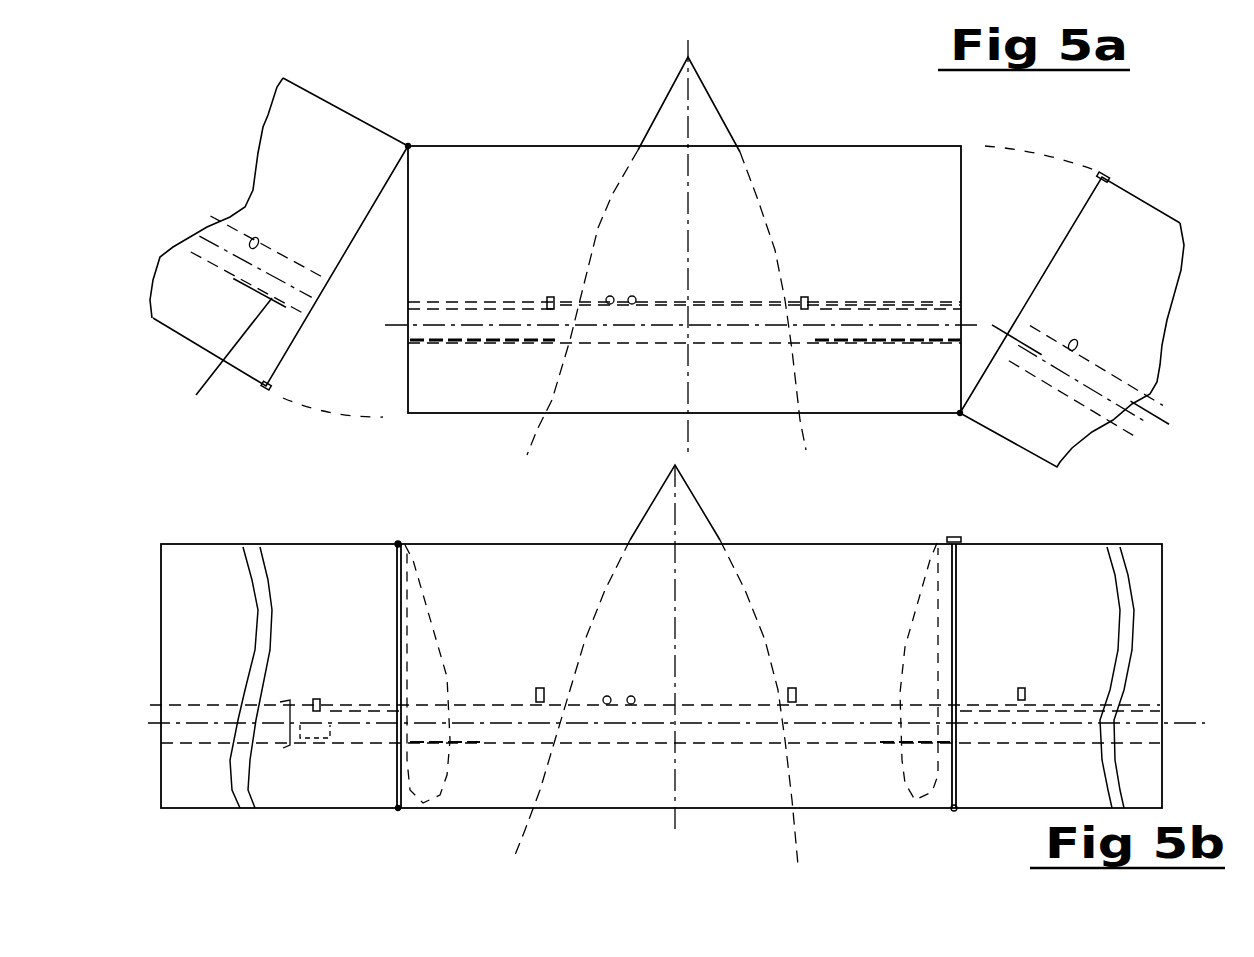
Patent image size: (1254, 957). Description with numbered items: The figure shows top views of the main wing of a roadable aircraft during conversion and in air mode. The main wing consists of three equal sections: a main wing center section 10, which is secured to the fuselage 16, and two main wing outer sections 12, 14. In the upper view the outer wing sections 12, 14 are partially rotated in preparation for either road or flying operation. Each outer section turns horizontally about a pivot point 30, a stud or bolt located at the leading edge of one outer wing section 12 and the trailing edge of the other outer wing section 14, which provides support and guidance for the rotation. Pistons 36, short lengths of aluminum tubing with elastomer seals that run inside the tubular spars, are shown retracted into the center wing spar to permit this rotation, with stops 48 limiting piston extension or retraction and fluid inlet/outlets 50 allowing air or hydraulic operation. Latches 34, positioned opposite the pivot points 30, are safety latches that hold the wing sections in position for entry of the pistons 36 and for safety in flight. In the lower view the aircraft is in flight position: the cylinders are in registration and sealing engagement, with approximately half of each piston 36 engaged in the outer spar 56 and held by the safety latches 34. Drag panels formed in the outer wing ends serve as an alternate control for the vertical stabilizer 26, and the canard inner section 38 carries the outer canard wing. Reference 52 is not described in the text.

In FIG. 5a, the main wing center section 10 is at (805, 200).
In FIG. 5b, the main wing center section 10 is at (568, 597).
In FIG. 5a, the main wing outer section 12 is at (1130, 246).
In FIG. 5b, the main wing outer section 12 is at (1018, 577).
In FIG. 5a, the main wing outer section 14 is at (302, 149).
In FIG. 5b, the main wing outer section 14 is at (292, 622).
In FIG. 5a, the fuselage 16 is at (703, 101).
In FIG. 5b, the fuselage 16 is at (692, 513).
In FIG. 5b, the vertical stabilizer 26 is at (422, 658).
In FIG. 5a, the pivot point 30 is at (408, 146).
In FIG. 5b, the pivot point 30 is at (955, 810).
In FIG. 5a, the latch 34 is at (269, 398).
In FIG. 5b, the latch 34 is at (392, 809).
In FIG. 5a, the piston 36 is at (508, 345).
In FIG. 5b, the piston 36 is at (420, 730).
In FIG. 5b, the canard inner section 38 is at (397, 544).
In FIG. 5a, the stop 48 is at (252, 240).
In FIG. 5b, the stop 48 is at (317, 709).
In FIG. 5b, the fluid inlet/outlet 50 is at (608, 705).
In FIG. 5a, the rod 52 is at (922, 306).
In FIG. 5a, the outer spar 56 is at (210, 367).